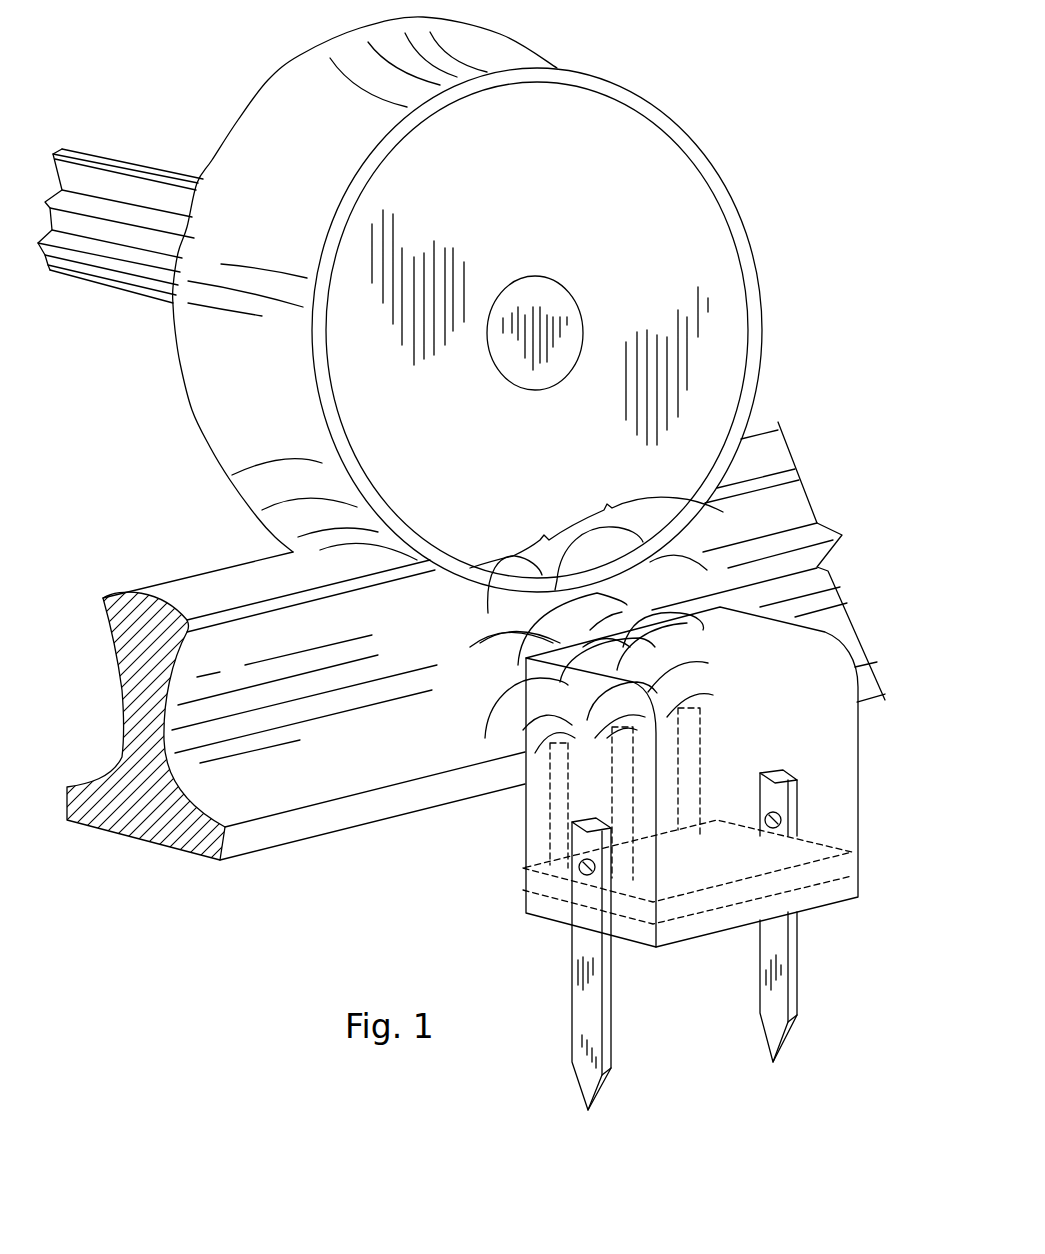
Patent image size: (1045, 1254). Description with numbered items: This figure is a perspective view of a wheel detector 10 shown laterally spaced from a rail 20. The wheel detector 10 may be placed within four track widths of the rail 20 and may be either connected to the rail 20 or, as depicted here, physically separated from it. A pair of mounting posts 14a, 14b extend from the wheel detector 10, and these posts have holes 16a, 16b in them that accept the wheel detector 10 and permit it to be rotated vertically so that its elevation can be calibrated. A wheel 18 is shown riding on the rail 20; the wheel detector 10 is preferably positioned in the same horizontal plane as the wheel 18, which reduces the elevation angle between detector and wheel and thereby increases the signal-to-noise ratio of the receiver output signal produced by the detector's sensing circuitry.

The wheel detector 10 is at (876, 753).
The mounting post 14a is at (568, 972).
The mounting post 14b is at (800, 973).
The hole 16a is at (577, 864).
The hole 16b is at (781, 819).
The wheel 18 is at (707, 165).
The rail 20 is at (138, 838).